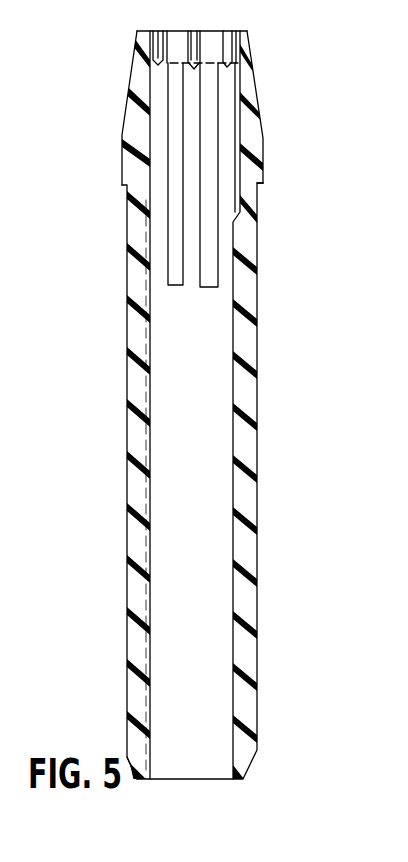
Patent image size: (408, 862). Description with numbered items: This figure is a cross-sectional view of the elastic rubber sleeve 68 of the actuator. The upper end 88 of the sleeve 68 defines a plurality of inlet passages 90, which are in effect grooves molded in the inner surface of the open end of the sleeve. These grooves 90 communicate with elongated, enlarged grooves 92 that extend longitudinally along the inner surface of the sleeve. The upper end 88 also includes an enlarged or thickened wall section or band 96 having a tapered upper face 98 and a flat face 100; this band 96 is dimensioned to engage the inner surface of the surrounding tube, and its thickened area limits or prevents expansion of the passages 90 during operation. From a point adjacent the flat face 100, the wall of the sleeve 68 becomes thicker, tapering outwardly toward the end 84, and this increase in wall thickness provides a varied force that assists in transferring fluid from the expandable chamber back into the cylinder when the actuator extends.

The sleeve 68 is at (101, 240).
The end of sleeve 84 is at (134, 703).
The upper end of sleeve 88 is at (275, 70).
The inlet passages 90 is at (190, 42).
The elongated enlarged grooves 92 is at (260, 114).
The thickened wall section or band 96 is at (112, 131).
The tapered upper face 98 is at (133, 84).
The flat face 100 is at (264, 187).